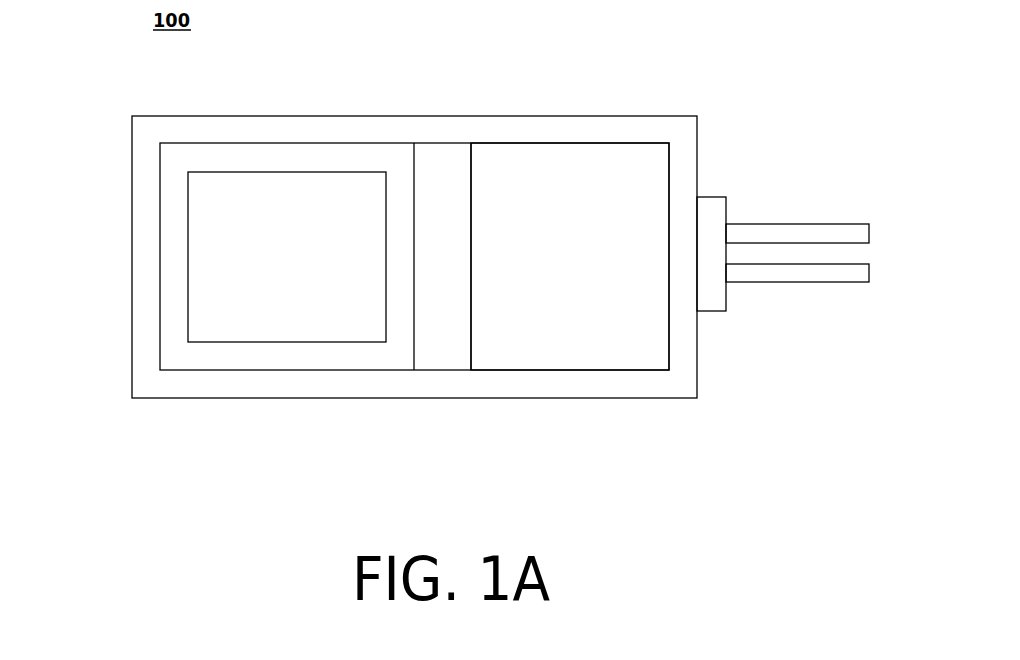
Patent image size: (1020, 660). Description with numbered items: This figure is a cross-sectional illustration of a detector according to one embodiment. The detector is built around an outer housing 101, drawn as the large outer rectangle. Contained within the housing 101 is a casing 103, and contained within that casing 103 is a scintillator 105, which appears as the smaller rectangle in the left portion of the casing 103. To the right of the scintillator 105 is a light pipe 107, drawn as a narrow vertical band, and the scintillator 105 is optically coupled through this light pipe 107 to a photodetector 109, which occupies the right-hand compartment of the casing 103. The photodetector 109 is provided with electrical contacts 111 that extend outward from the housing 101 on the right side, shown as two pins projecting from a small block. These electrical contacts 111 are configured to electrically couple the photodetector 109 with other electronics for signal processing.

The housing 101 is at (367, 257).
The casing 103 is at (177, 345).
The scintillator 105 is at (254, 321).
The light pipe 107 is at (489, 299).
The photodetector 109 is at (593, 211).
The electrical contacts 111 is at (812, 201).